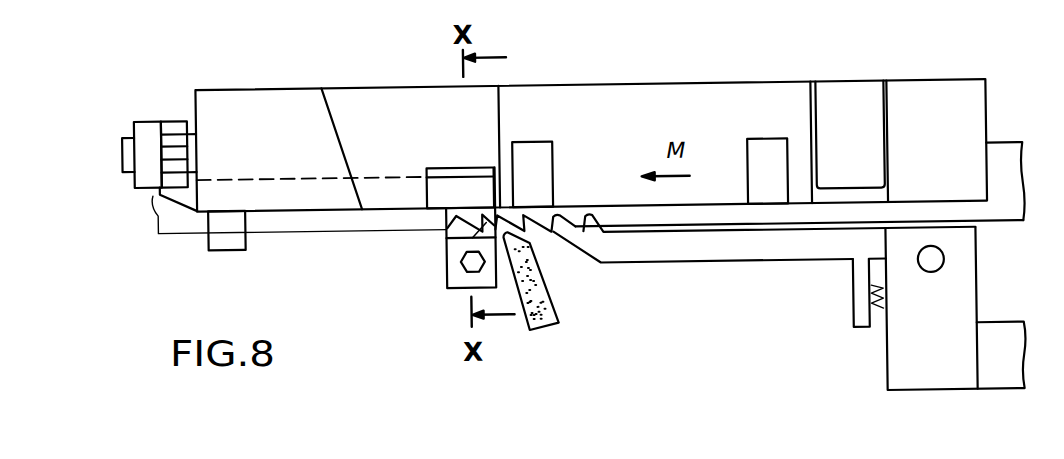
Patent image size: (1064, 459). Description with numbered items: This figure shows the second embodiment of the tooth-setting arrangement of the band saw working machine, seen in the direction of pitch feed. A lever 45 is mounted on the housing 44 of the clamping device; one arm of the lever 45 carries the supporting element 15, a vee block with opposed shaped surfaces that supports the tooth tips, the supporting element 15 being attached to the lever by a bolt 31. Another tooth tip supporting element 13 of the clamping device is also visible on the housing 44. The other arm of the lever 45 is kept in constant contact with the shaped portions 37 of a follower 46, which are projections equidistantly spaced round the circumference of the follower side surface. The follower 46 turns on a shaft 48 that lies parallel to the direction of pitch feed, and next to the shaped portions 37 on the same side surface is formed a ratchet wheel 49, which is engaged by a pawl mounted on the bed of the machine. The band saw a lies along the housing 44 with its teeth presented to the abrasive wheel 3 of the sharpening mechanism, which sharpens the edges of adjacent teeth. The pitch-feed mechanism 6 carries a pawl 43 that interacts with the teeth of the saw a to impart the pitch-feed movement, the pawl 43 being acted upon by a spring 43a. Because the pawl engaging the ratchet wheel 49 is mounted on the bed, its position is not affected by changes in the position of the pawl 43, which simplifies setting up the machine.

The housing 44 is at (736, 84).
The lever 45 is at (448, 181).
The supporting element 15 is at (455, 278).
The bolt 31 is at (458, 260).
The pawl 43 is at (652, 253).
The spring 43a is at (868, 306).
The band saw a is at (1001, 148).
The pitch-feed mechanism 6 is at (995, 326).
The abrasive wheel 3 is at (550, 290).
The tooth tip supporting element 13 is at (232, 237).
The follower 46 is at (140, 191).
The ratchet wheel 49 is at (145, 116).
The shaped portions 37 is at (168, 116).
The shaft 48 is at (135, 182).